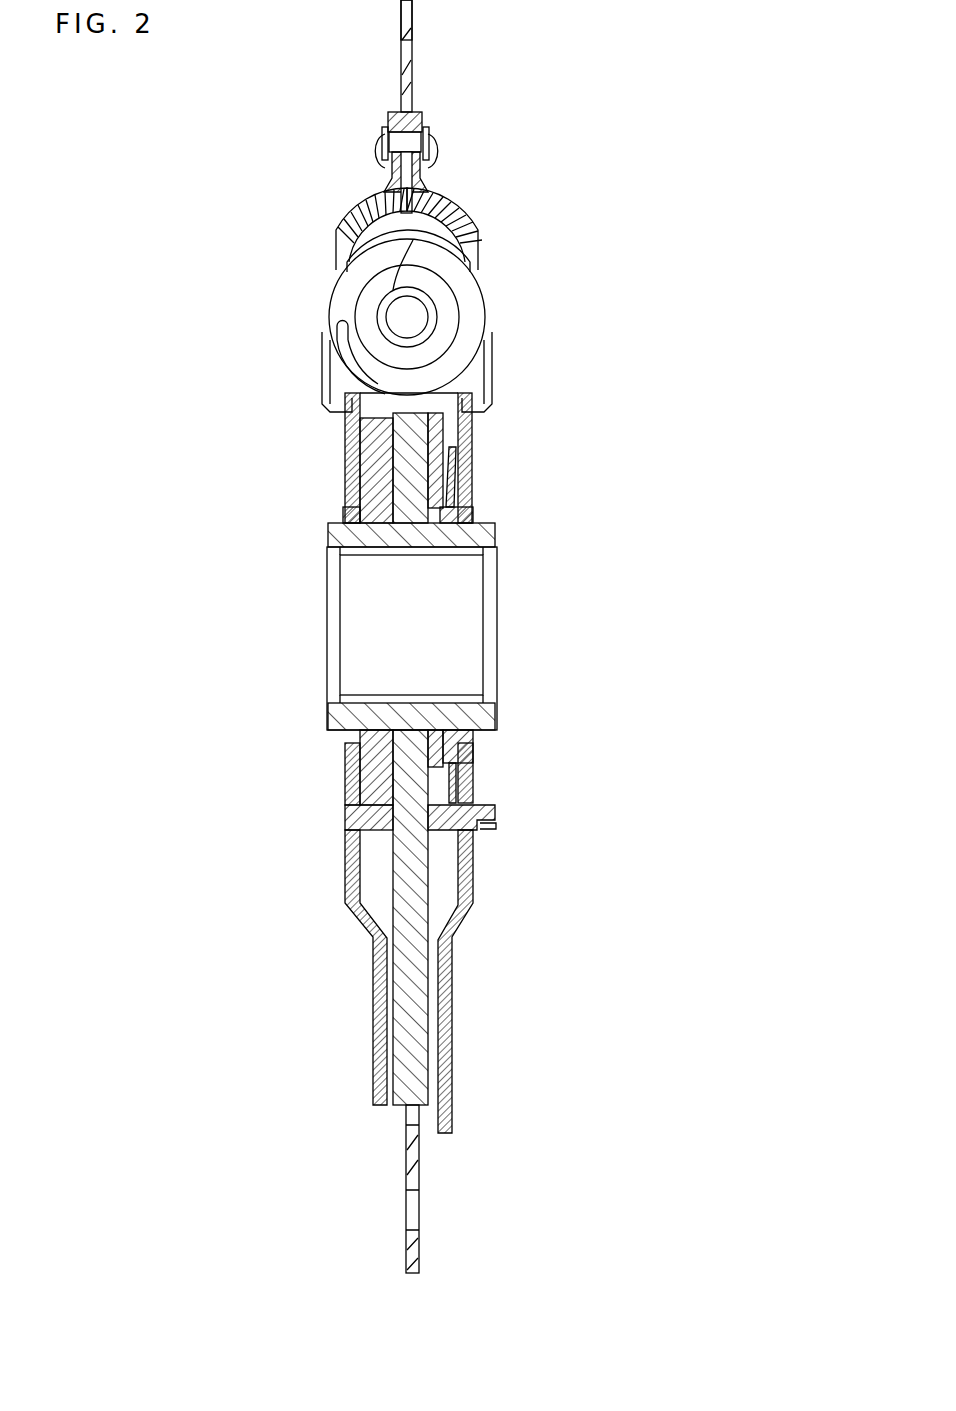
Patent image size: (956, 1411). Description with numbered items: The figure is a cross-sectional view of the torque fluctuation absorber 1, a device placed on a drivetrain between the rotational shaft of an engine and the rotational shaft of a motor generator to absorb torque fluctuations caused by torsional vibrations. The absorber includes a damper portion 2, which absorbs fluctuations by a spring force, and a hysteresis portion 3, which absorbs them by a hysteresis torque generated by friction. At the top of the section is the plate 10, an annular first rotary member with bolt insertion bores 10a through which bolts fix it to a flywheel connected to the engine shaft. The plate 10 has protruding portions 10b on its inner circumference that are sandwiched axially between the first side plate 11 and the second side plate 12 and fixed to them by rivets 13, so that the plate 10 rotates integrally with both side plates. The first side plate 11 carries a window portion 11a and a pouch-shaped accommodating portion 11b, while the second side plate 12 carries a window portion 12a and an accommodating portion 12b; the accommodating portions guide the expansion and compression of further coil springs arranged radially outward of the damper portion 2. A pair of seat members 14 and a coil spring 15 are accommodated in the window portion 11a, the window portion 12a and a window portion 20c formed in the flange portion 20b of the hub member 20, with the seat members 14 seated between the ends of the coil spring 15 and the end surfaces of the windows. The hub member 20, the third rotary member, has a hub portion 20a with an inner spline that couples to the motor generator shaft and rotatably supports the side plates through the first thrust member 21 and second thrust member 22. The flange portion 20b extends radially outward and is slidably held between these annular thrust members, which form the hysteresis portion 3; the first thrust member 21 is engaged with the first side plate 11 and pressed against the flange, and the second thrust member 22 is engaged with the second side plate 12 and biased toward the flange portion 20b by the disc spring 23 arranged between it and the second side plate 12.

The torque fluctuation absorber 1 is at (702, 105).
The damper portion 2 is at (498, 318).
The hysteresis portion 3 is at (500, 455).
The plate 10 is at (401, 70).
The bolt insertion bore 10a is at (412, 26).
The protruding portion 10b is at (388, 125).
The first side plate 11 is at (352, 201).
The window portion 11a is at (340, 230).
The accommodating portion 11b is at (382, 168).
The second side plate 12 is at (462, 200).
The window portion 12a is at (474, 232).
The accommodating portion 12b is at (437, 165).
The rivet 13 is at (421, 142).
The seat member 14 is at (330, 267).
The coil spring 15 is at (472, 300).
The hub member 20 is at (505, 622).
The hub portion 20a is at (332, 535).
The flange portion 20b is at (415, 990).
The window portion 20c is at (400, 405).
The first thrust member 21 is at (378, 465).
The second thrust member 22 is at (440, 433).
The disc spring 23 is at (452, 478).